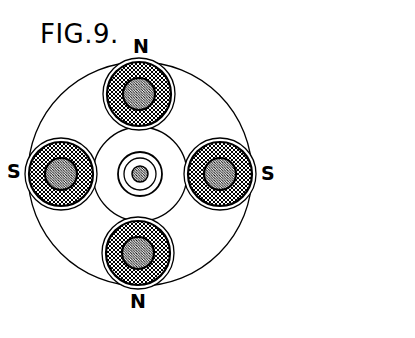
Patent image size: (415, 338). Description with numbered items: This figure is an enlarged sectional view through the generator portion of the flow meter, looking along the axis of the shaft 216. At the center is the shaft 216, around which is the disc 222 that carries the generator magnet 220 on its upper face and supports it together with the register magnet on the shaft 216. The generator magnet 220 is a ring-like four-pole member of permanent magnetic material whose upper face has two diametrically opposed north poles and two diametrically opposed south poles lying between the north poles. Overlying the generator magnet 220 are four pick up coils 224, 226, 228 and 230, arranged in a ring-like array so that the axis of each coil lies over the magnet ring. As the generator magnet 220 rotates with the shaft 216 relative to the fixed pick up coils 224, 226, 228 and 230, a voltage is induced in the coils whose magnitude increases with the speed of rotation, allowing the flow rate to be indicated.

The shaft 216 is at (140, 166).
The generator magnet 220 is at (210, 93).
The disc 222 is at (113, 212).
The pick up coil 224 is at (170, 245).
The pick up coil 226 is at (232, 147).
The pick up coil 228 is at (113, 82).
The pick up coil 230 is at (50, 203).